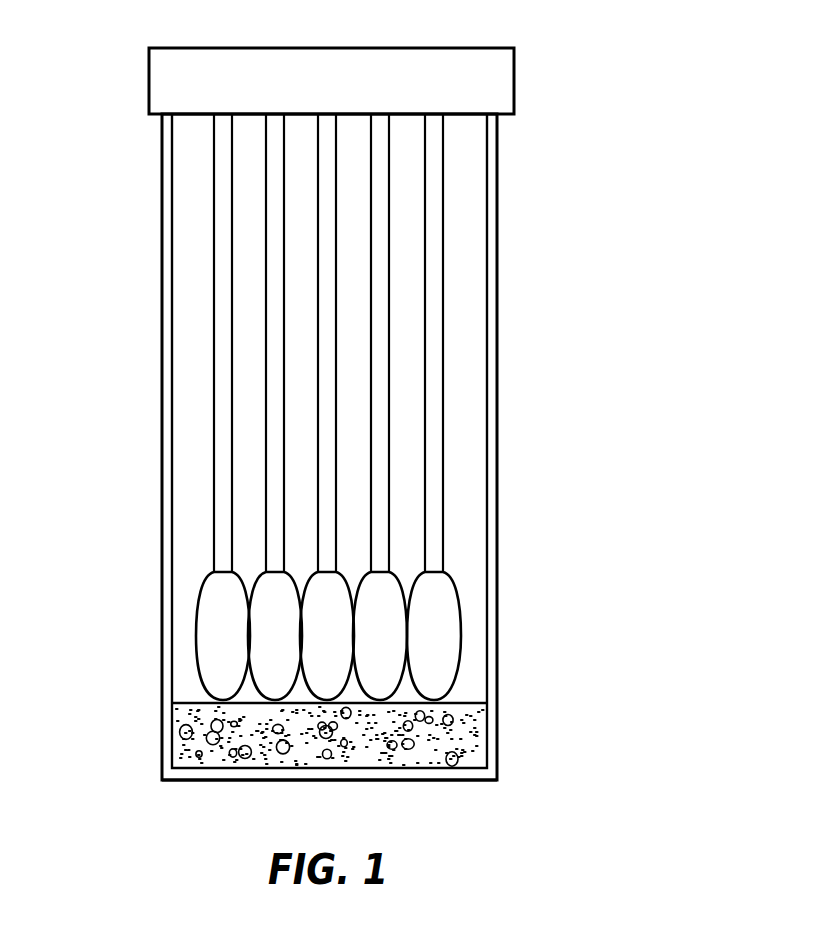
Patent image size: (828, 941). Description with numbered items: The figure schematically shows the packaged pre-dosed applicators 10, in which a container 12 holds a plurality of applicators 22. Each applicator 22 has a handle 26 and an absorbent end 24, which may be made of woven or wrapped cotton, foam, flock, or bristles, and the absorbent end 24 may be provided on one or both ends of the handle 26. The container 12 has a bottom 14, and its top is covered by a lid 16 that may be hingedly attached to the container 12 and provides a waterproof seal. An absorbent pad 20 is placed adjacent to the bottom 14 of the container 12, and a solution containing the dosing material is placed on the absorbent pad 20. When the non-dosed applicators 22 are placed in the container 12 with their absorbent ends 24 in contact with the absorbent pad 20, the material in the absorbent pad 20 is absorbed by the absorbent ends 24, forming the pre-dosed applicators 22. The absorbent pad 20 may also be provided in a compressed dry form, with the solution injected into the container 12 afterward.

The packaged pre-dosed applicators 10 is at (372, 433).
The container 12 is at (162, 440).
The bottom 14 is at (239, 781).
The lid 16 is at (514, 74).
The absorbent pad 20 is at (460, 738).
The applicators 22 is at (380, 407).
The absorbent end 24 is at (460, 633).
The handle 26 is at (444, 288).